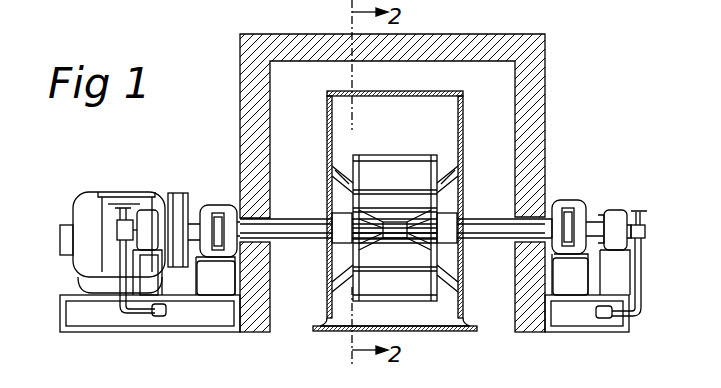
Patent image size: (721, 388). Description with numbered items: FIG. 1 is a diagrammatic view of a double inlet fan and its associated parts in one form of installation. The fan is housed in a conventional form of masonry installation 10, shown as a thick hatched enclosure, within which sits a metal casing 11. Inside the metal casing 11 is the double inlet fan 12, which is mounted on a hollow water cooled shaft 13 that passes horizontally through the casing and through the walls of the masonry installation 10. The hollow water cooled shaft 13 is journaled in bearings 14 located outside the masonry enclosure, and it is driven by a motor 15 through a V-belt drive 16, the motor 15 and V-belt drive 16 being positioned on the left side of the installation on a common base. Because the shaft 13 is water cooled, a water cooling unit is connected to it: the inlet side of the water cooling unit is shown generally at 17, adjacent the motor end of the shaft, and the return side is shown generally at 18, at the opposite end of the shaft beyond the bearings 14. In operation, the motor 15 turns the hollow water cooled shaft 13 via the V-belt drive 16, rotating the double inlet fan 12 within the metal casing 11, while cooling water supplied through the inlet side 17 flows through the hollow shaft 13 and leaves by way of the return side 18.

The masonry installation 10 is at (540, 92).
The metal casing 11 is at (462, 130).
The double inlet fan 12 is at (384, 160).
The hollow water cooled shaft 13 is at (478, 220).
The bearings 14 is at (568, 206).
The motor 15 is at (122, 196).
The V-belt drive 16 is at (182, 192).
The inlet side of water cooling unit 17 is at (145, 228).
The return side of water cooling unit 18 is at (616, 216).